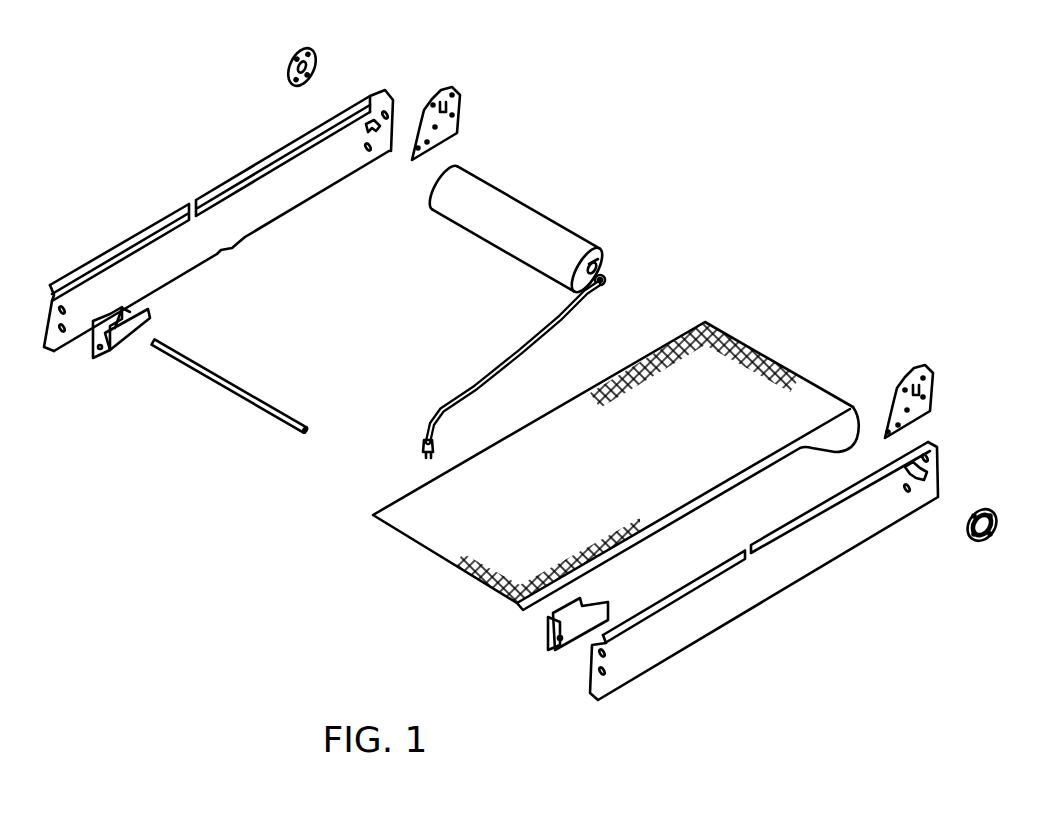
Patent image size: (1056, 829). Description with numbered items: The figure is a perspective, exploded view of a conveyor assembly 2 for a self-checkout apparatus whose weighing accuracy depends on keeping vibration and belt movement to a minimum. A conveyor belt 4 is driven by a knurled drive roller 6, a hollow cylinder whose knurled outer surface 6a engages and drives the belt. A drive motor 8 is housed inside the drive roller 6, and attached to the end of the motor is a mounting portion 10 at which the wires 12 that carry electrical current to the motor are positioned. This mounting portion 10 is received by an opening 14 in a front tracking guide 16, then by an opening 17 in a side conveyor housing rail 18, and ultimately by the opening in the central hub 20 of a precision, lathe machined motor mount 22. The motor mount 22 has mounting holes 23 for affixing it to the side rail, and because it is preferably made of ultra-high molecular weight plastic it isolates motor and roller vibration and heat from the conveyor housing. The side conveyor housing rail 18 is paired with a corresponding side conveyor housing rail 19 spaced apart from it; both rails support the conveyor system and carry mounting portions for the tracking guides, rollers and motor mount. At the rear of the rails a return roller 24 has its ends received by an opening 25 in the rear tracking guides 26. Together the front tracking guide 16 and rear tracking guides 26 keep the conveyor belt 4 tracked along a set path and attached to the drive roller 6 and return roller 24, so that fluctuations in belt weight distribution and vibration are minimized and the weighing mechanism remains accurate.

The conveyor assembly 2 is at (176, 128).
The conveyor belt 4 is at (650, 356).
The knurled drive roller 6 is at (499, 231).
The knurled outer surface 6a is at (553, 228).
The drive motor 8 is at (606, 258).
The mounting portion 10 is at (608, 282).
The wires 12 is at (480, 378).
The opening 14 is at (446, 107).
The front tracking guide 16 is at (458, 98).
The opening 17 is at (927, 472).
The side conveyor housing rail 18 is at (818, 550).
The side conveyor housing rail 19 is at (112, 276).
The central hub 20 is at (997, 528).
The motor mount 22 is at (992, 516).
The mounting holes 23 is at (970, 530).
The return roller 24 is at (221, 383).
The opening 25 is at (116, 342).
The rear tracking guides 26 is at (93, 352).